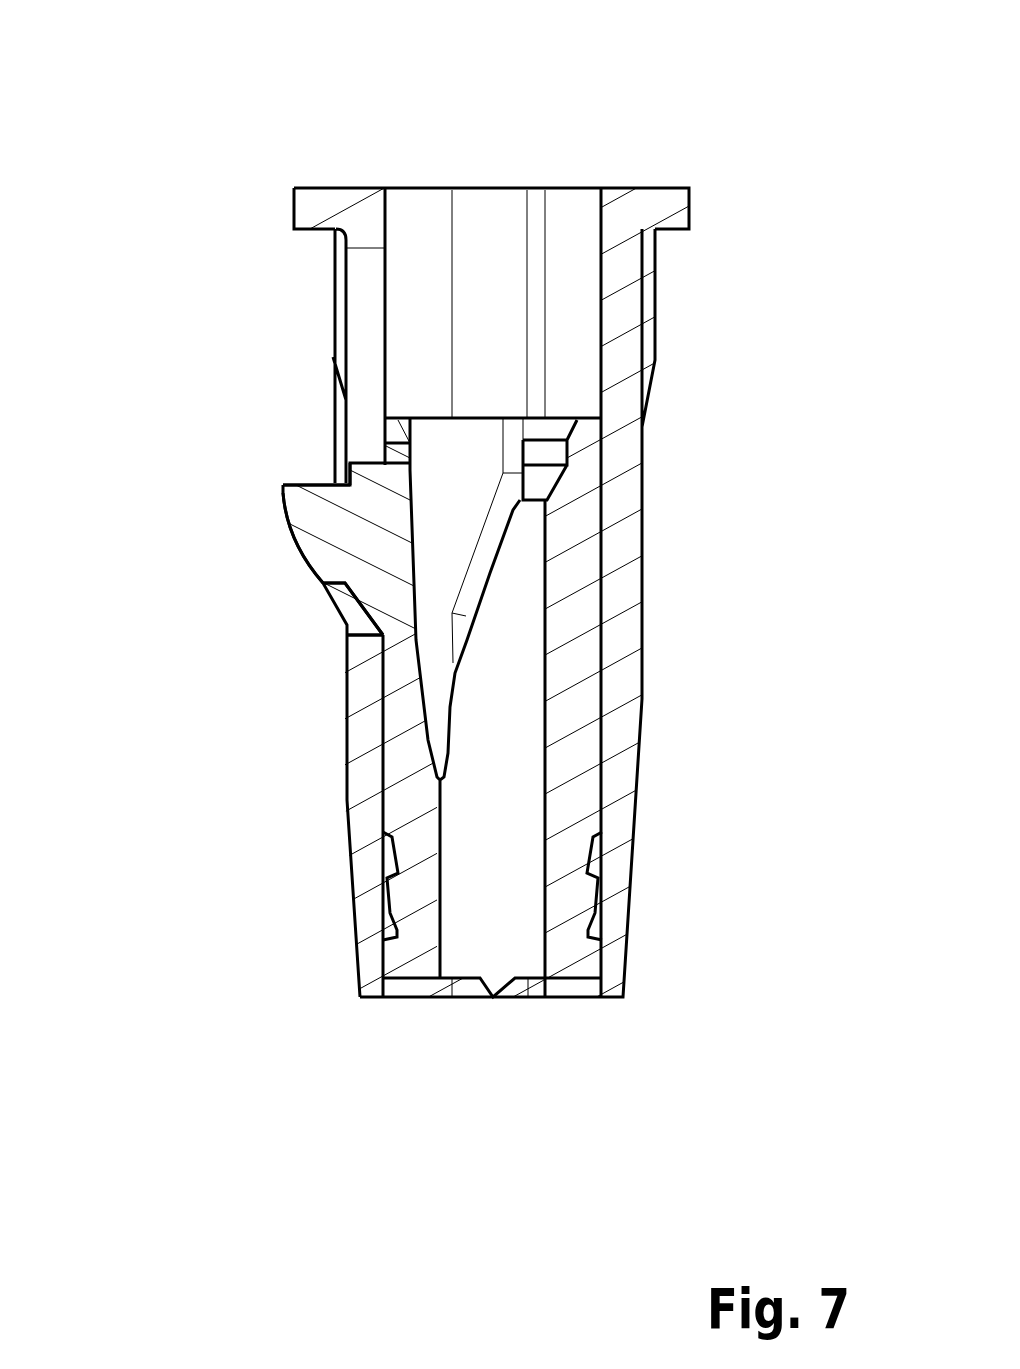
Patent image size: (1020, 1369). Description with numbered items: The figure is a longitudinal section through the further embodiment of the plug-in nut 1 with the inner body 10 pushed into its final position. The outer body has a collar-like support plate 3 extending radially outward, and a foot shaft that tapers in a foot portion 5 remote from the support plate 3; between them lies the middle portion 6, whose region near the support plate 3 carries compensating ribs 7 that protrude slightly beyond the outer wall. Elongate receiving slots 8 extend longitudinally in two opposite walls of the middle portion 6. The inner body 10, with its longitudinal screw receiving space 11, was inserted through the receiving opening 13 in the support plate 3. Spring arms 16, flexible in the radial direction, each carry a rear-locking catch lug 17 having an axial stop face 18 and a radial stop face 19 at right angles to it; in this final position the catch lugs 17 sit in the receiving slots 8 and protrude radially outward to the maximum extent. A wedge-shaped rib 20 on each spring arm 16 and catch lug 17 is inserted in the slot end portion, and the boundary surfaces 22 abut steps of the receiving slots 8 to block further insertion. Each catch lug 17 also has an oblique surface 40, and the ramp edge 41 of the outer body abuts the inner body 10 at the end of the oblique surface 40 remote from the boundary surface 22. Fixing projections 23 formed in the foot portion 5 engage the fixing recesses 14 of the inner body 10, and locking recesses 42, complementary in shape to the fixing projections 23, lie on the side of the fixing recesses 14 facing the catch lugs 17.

The plug-in nut 1 is at (243, 112).
The support plate 3 is at (665, 202).
The foot portion 5 is at (622, 975).
The middle portion 6 is at (620, 496).
The compensating ribs 7 is at (336, 278).
The receiving slots 8 is at (364, 342).
The inner body 10 is at (511, 736).
The screw receiving space 11 is at (463, 520).
The receiving opening 13 is at (417, 233).
The fixing recesses 14 is at (408, 937).
The spring arms 16 is at (400, 705).
The rear-locking catch lug 17 is at (300, 512).
The axial stop face 18 is at (300, 485).
The radial stop face 19 is at (348, 483).
The wedge-shaped rib 20 is at (313, 556).
The boundary surfaces 22 is at (337, 605).
The fixing projections 23 is at (603, 905).
The oblique surface 40 is at (350, 640).
The ramp edge 41 is at (365, 650).
The locking recesses 42 is at (402, 853).